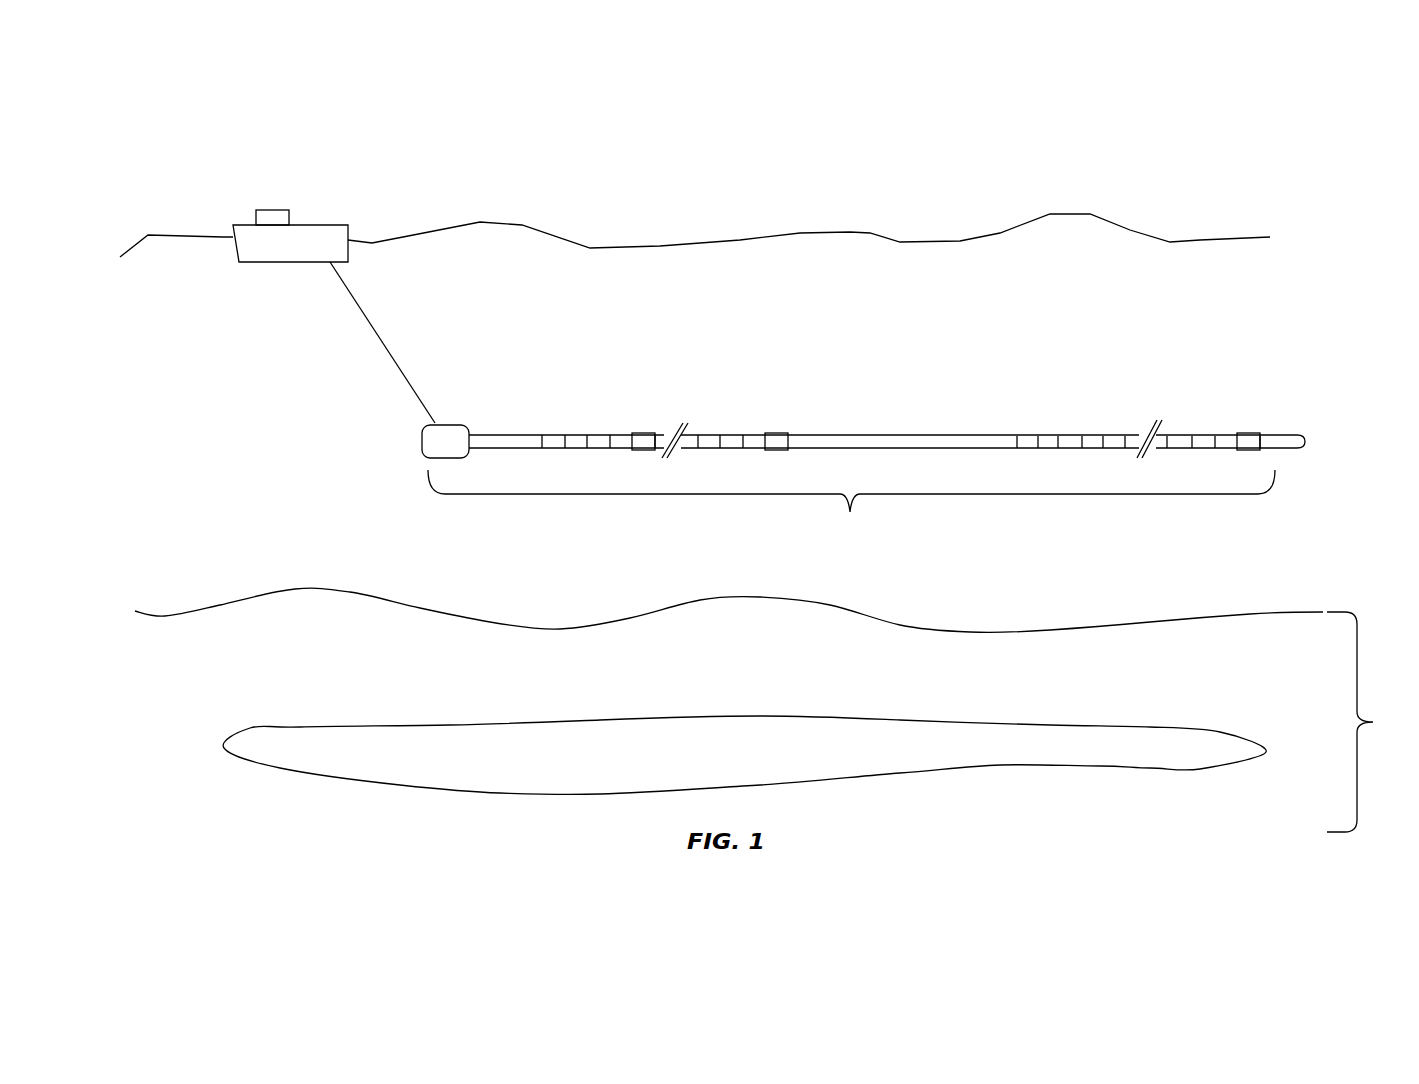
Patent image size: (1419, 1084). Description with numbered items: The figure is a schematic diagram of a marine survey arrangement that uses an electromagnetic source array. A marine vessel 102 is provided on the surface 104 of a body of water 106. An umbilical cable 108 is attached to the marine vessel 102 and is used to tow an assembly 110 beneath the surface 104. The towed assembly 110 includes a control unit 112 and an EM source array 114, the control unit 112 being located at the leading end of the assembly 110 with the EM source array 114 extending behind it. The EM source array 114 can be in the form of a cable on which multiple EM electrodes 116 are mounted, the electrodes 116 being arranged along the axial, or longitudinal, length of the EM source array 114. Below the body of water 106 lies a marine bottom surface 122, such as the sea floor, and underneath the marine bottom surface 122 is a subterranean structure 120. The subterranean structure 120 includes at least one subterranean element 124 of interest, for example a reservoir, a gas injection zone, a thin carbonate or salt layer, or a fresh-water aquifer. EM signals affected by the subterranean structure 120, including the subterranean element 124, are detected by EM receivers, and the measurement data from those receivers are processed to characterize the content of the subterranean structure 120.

The marine vessel 102 is at (307, 228).
The surface 104 is at (695, 225).
The body of water 106 is at (241, 456).
The umbilical cable 108 is at (397, 342).
The assembly 110 is at (862, 479).
The control unit 112 is at (480, 421).
The EM source array 114 is at (1278, 403).
The EM electrodes 116 is at (662, 435).
The subterranean structure 120 is at (1369, 722).
The marine bottom surface 122 is at (729, 609).
The subterranean element 124 is at (744, 736).